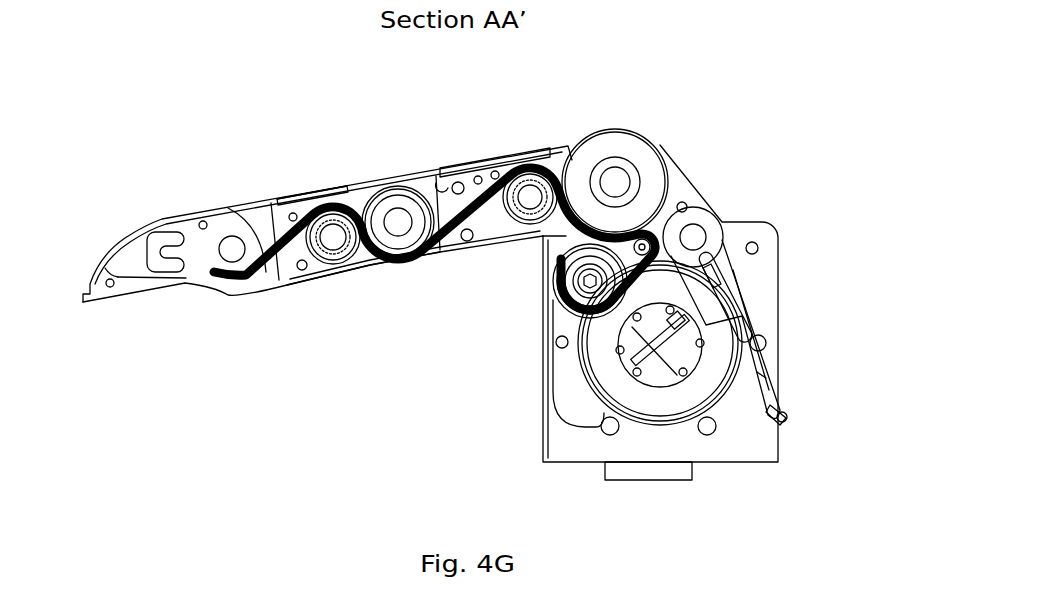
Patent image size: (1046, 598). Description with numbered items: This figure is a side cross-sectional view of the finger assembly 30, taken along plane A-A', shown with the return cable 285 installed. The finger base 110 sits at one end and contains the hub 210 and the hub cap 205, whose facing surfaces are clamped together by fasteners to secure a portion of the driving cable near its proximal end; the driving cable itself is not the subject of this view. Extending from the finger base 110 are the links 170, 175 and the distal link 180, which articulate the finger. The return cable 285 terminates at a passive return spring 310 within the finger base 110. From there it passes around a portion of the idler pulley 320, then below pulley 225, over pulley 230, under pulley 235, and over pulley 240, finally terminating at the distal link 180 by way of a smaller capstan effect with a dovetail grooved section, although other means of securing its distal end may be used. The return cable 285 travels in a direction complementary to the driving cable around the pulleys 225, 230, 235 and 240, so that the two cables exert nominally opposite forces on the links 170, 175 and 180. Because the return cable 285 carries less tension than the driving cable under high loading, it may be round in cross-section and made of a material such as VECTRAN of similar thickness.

The finger assembly 30 is at (818, 122).
The finger base 110 is at (823, 243).
The link 170 is at (497, 252).
The link 175 is at (357, 270).
The distal link 180 is at (230, 297).
The hub cap 205 is at (662, 368).
The hub 210 is at (690, 348).
The pulley 225 is at (637, 140).
The pulley 230 is at (525, 172).
The pulley 235 is at (390, 200).
The pulley 240 is at (310, 210).
The return cable 285 is at (272, 273).
The passive return spring 310 is at (558, 293).
The idler pulley 320 is at (675, 195).